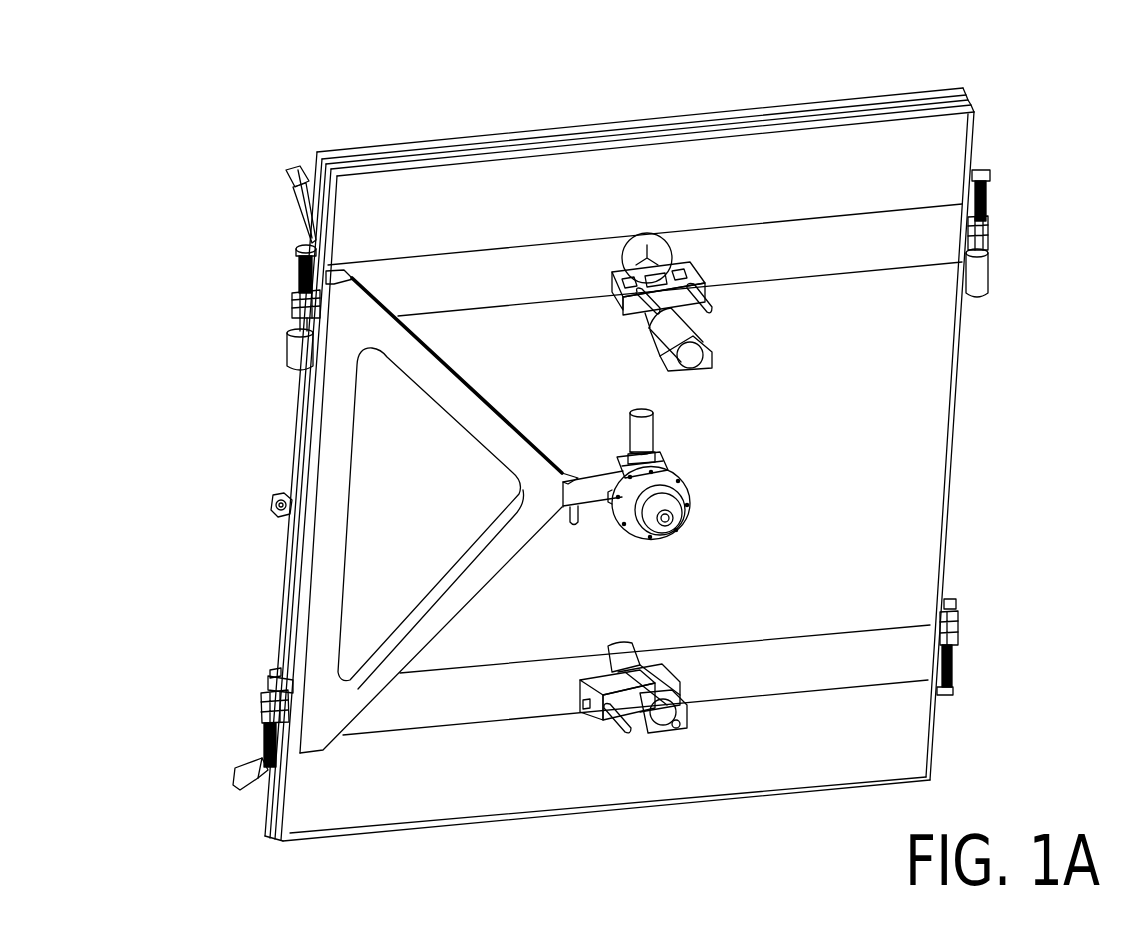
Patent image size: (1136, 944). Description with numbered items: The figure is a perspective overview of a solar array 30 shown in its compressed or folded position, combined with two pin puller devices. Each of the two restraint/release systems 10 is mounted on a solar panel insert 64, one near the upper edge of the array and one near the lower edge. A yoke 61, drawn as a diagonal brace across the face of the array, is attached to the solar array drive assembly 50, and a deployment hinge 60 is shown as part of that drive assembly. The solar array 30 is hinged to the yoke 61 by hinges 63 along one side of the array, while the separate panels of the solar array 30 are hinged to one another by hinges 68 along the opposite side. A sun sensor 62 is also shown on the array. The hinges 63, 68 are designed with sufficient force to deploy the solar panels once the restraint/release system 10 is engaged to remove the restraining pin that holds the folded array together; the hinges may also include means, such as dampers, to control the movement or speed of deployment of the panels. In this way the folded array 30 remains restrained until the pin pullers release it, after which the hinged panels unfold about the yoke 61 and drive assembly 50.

The restraint/release system 10 is at (678, 256).
The solar array 30 is at (790, 147).
The solar array drive assembly 50 is at (690, 497).
The deployment hinge 60 is at (660, 458).
The yoke 61 is at (415, 615).
The sun sensor 62 is at (273, 507).
The hinges 63 is at (295, 300).
The solar panel insert 64 is at (663, 240).
The hinges 68 is at (978, 227).